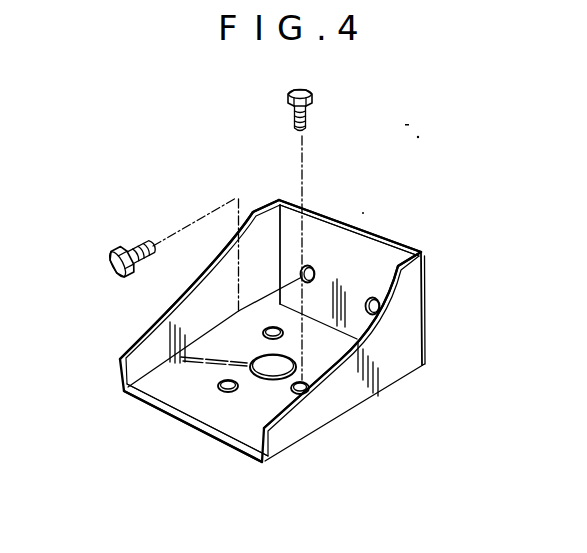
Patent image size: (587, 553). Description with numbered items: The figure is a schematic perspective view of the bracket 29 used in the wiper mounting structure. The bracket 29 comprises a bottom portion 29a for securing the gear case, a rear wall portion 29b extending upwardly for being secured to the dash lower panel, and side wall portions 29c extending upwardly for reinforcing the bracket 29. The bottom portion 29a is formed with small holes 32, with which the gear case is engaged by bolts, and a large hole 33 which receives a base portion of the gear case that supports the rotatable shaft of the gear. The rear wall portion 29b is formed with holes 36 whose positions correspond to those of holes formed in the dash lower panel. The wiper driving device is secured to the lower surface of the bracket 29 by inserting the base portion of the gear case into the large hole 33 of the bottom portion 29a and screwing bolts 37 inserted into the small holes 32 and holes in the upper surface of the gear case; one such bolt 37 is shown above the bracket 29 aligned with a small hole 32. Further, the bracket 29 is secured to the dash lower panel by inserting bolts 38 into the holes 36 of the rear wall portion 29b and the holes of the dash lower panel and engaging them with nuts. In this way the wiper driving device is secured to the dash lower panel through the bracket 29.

The bracket 29 is at (392, 401).
The bottom portion 29a is at (214, 418).
The rear wall portion 29b is at (374, 250).
The side wall portions 29c is at (150, 352).
The small holes 32 is at (265, 332).
The large hole 33 is at (293, 358).
The holes 36 is at (369, 300).
The bolts 37 is at (314, 98).
The bolts 38 is at (112, 256).